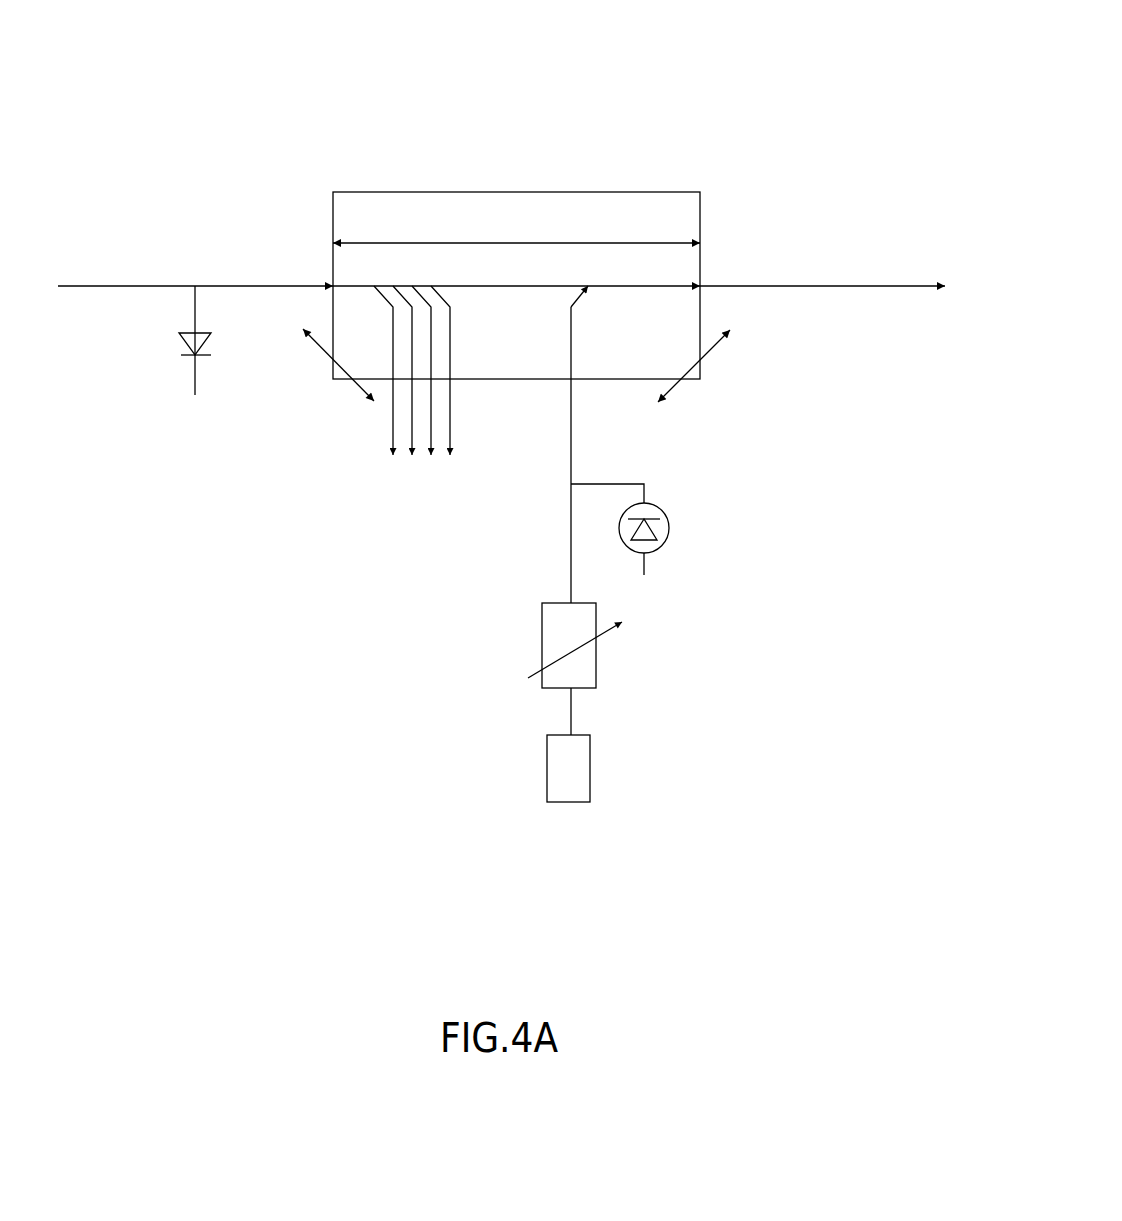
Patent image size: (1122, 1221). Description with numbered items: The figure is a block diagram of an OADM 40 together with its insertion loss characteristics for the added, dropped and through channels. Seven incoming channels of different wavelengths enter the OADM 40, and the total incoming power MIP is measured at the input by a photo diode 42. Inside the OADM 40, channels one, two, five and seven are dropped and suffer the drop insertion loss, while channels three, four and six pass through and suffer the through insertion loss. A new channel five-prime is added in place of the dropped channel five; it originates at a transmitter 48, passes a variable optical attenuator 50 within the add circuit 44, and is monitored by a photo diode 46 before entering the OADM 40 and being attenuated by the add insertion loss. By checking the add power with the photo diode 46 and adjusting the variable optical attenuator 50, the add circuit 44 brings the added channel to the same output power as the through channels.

The OADM 40 is at (760, 73).
The photo diode 42 is at (181, 342).
The add circuit 44 is at (679, 458).
The photo diode 46 is at (670, 520).
The transmitter 48 is at (590, 768).
The variable optical attenuator 50 is at (596, 658).